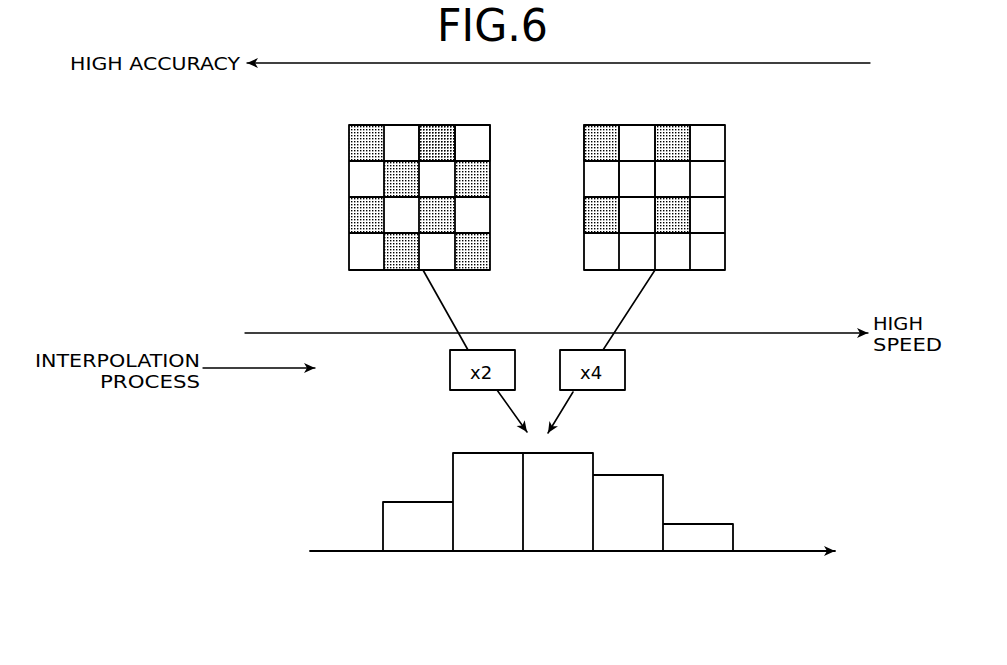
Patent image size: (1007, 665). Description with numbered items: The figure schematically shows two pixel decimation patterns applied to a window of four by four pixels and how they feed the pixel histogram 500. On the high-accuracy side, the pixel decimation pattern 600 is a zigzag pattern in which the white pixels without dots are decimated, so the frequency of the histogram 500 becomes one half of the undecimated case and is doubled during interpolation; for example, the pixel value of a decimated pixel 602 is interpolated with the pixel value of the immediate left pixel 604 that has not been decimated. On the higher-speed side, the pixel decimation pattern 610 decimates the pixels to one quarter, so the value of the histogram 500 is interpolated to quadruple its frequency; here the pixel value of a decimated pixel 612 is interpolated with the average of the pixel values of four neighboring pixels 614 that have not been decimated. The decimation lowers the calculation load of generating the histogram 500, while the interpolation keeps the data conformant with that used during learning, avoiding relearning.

The pixel decimation pattern 600 is at (349, 183).
The decimated pixel 602 is at (472, 130).
The immediate left pixel 604 is at (432, 127).
The pixel decimation pattern 610 is at (727, 172).
The decimated pixel 612 is at (636, 165).
The neighboring pixels 614 is at (600, 128).
The histogram 500 is at (550, 568).